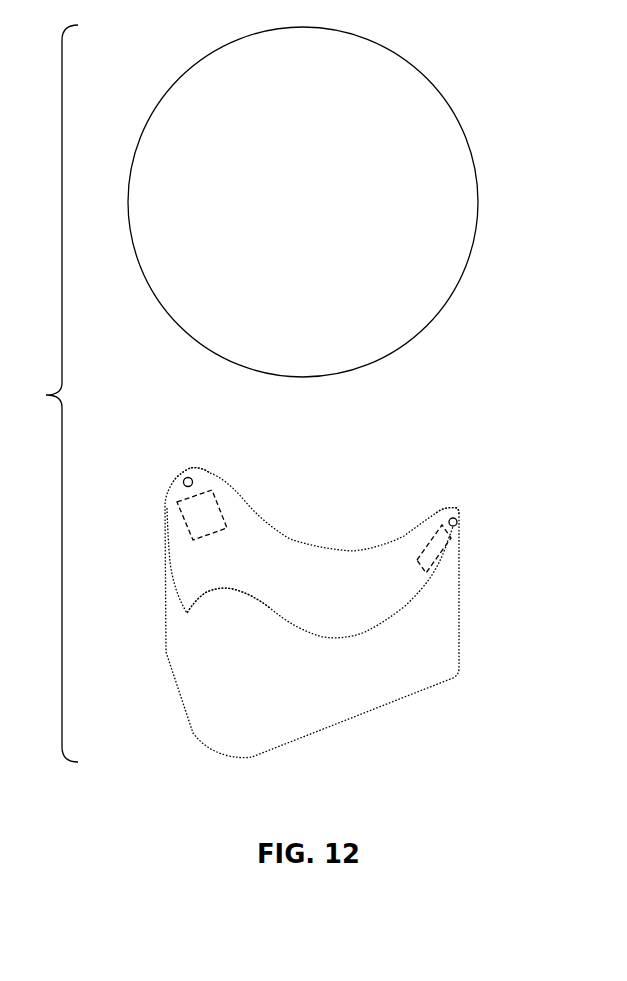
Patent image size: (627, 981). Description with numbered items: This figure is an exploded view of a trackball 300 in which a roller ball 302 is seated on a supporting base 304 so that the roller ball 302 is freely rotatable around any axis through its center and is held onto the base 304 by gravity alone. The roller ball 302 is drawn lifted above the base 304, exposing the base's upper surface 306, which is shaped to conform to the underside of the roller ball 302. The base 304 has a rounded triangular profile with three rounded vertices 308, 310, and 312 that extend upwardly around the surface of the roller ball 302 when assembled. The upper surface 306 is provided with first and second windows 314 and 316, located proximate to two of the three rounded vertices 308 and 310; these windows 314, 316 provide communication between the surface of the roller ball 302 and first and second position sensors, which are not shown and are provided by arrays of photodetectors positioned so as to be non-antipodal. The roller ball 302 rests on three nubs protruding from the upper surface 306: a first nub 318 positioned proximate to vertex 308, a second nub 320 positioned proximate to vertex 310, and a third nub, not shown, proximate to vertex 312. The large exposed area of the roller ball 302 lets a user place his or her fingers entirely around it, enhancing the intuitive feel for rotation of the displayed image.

The trackball 300 is at (39, 393).
The roller ball 302 is at (400, 157).
The supporting base 304 is at (467, 430).
The upper surface 306 is at (358, 607).
The rounded vertex 308 is at (183, 470).
The rounded vertex 310 is at (459, 508).
The rounded vertex 312 is at (226, 588).
The first window 314 is at (218, 513).
The second window 316 is at (430, 543).
The first nub 318 is at (192, 479).
The second nub 320 is at (451, 518).